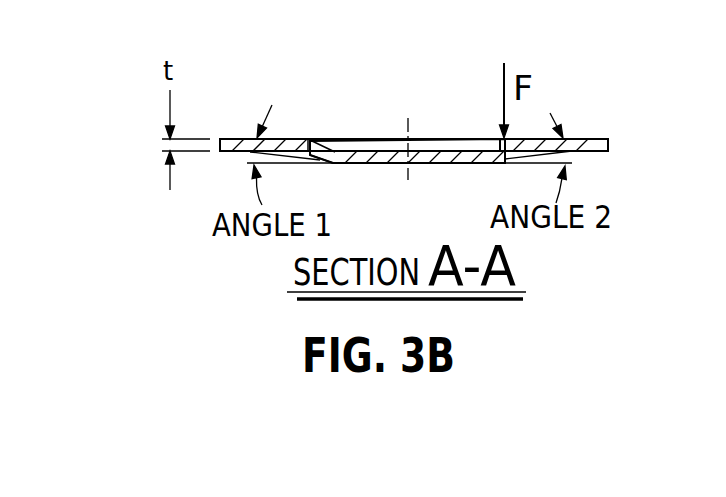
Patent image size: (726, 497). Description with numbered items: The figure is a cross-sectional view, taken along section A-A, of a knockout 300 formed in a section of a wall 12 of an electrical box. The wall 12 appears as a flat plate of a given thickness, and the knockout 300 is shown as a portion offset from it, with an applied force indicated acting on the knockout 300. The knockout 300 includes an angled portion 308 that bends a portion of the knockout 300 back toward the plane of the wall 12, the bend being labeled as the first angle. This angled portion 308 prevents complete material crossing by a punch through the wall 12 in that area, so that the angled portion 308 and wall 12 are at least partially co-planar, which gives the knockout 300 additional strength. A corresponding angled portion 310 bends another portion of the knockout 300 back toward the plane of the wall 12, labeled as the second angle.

The wall 12 is at (235, 125).
The knockout 300 is at (438, 126).
The angled portion 308 is at (343, 127).
The angled portion 310 is at (484, 175).